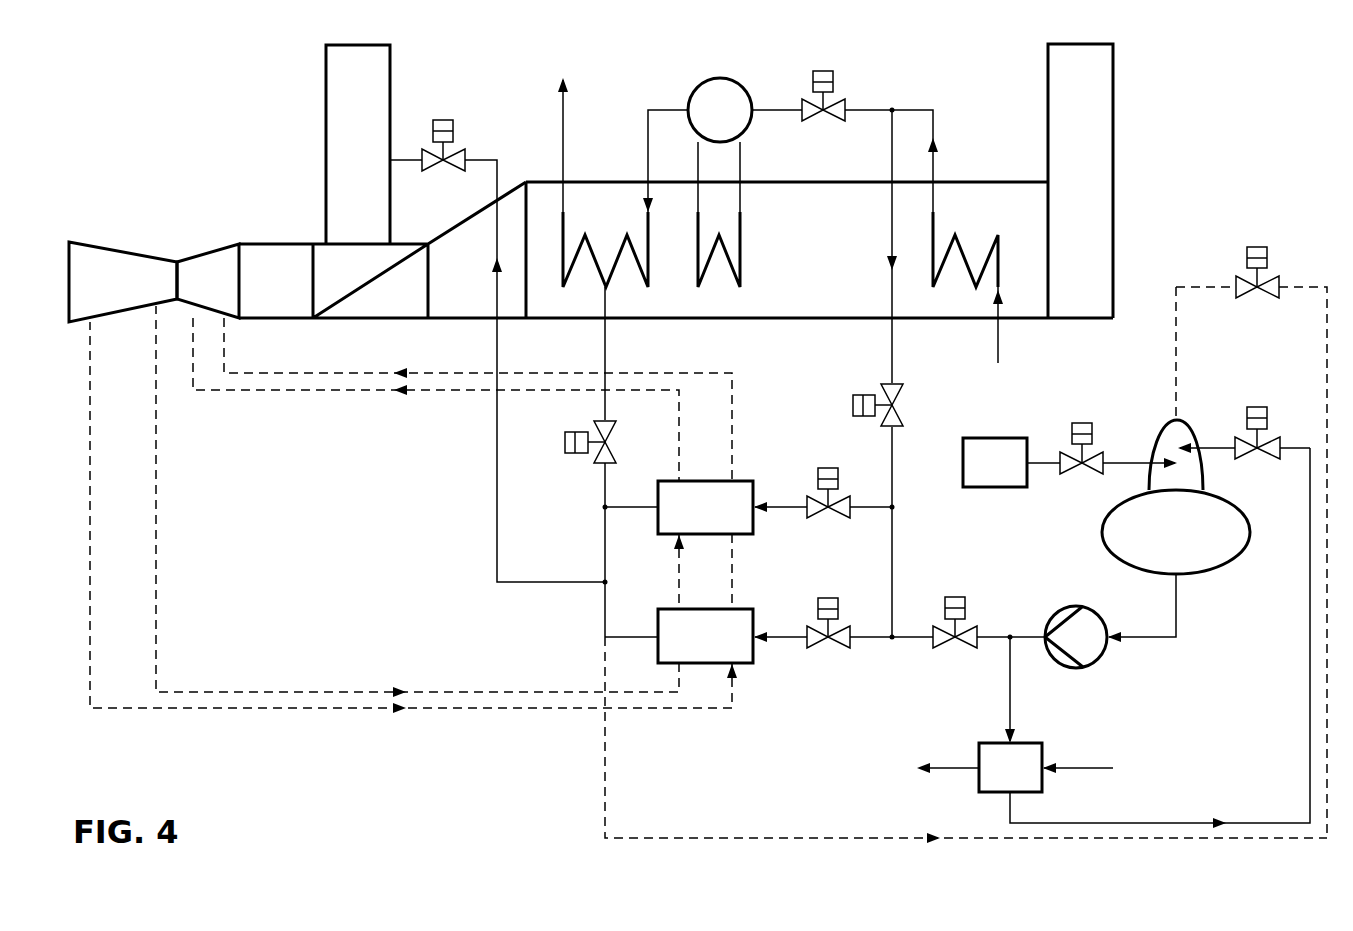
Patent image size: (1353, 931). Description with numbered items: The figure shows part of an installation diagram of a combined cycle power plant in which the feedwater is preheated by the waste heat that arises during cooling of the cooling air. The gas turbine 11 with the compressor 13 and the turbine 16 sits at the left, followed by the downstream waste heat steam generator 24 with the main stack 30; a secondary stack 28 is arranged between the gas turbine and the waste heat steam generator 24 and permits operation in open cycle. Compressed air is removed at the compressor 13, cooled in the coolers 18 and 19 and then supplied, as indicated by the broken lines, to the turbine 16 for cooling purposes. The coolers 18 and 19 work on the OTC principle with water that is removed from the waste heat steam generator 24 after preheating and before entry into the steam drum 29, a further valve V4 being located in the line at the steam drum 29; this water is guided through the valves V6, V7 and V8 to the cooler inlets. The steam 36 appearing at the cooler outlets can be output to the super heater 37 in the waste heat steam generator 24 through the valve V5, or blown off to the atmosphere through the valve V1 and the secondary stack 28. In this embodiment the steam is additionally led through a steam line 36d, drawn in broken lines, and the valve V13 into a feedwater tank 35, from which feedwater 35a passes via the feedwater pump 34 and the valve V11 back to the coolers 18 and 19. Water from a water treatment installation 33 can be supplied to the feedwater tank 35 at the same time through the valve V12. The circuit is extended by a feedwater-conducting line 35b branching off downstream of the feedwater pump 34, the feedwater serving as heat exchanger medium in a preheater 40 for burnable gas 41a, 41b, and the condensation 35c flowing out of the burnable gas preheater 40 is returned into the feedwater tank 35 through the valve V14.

The gas turbine 11 is at (94, 126).
The compressor 13 is at (101, 292).
The turbine 16 is at (192, 292).
The cooler 18 is at (689, 651).
The cooler 19 is at (689, 522).
The waste heat steam generator 24 is at (730, 343).
The secondary stack 28 is at (341, 137).
The steam drum 29 is at (704, 124).
The main stack 30 is at (1065, 157).
The water treatment installation 33 is at (979, 477).
The feedwater pump 34 is at (1087, 645).
The feedwater tank 35 is at (1160, 544).
The feedwater 35a is at (1151, 640).
The feedwater-conducting line 35b is at (1010, 677).
The condensation 35c is at (1310, 592).
The steam 36 is at (497, 535).
The control line 36d is at (777, 838).
The super heater 37 is at (596, 266).
The preheater for burnable gas 40 is at (994, 782).
The burnable gas 41a is at (1082, 771).
The burnable gas 41b is at (924, 772).
The valve V1 is at (445, 117).
The valve V4 is at (838, 86).
The valve V5 is at (605, 457).
The valve V6 is at (847, 403).
The valve V7 is at (814, 484).
The valve V8 is at (814, 613).
The valve V11 is at (957, 593).
The valve V12 is at (1082, 419).
The valve V13 is at (1253, 242).
The valve V14 is at (1252, 403).